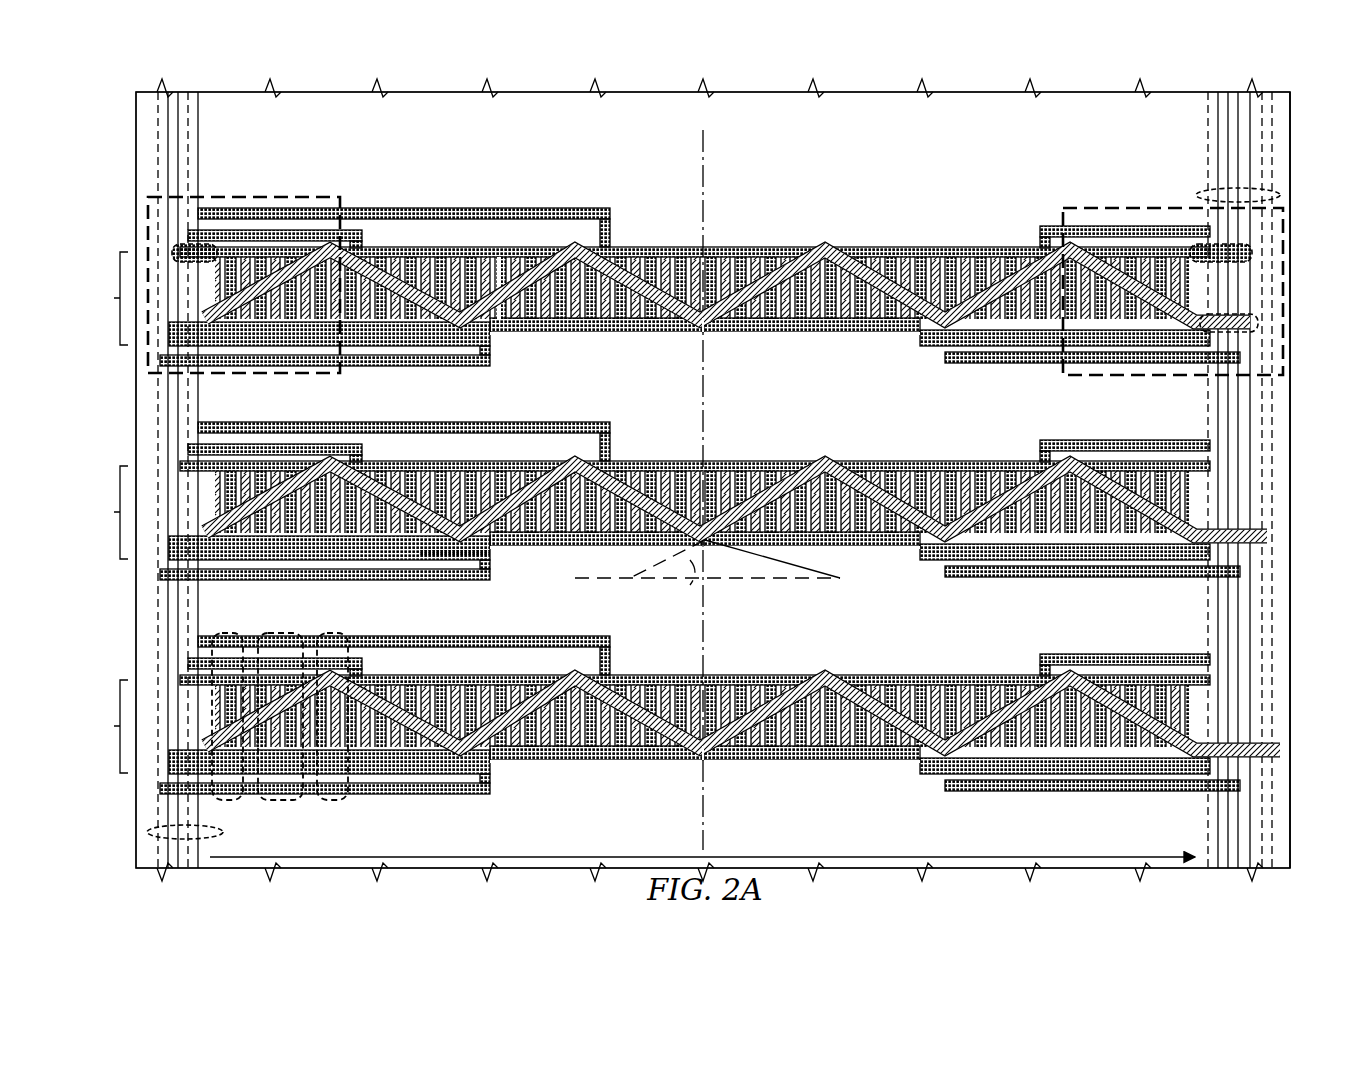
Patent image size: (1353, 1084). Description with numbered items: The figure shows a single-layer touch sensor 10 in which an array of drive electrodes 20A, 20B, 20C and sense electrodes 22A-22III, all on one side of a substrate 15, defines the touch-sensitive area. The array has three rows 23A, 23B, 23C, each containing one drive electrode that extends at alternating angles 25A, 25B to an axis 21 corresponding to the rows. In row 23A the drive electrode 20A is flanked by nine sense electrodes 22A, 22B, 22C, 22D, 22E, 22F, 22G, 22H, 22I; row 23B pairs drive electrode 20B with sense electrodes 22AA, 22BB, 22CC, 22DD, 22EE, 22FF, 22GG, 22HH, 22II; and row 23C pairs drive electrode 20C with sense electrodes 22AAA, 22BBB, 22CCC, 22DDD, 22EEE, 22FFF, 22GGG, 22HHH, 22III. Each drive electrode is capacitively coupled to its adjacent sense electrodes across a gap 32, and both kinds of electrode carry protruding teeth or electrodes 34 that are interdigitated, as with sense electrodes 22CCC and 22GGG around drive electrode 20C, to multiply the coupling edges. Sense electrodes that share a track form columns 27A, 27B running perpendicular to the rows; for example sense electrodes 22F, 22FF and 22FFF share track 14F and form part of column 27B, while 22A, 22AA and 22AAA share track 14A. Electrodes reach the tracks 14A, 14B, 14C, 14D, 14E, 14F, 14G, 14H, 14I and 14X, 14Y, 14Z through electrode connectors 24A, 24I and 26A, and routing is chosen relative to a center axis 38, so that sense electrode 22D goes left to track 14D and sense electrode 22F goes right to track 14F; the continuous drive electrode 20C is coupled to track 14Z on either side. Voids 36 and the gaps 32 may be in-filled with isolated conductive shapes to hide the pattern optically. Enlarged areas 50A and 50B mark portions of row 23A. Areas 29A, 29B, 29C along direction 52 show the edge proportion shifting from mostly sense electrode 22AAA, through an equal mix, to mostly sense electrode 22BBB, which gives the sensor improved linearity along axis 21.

The touch sensor 10 is at (838, 172).
The track 14A is at (178, 183).
The track 14B is at (160, 165).
The track 14C is at (188, 163).
The track 14D is at (170, 185).
The track 14E is at (198, 143).
The track 14F is at (1238, 152).
The track 14G is at (1208, 142).
The track 14H is at (1228, 182).
The track 14I is at (1218, 160).
The track 14X is at (1250, 172).
The track 14Y is at (1262, 412).
The track 14Z is at (1272, 688).
The substrate 15 is at (1290, 840).
The drive electrode 20A is at (826, 252).
The drive electrode 20B is at (736, 476).
The drive electrode 20C is at (742, 687).
The axis 21 is at (720, 578).
The sense electrode 22A is at (285, 262).
The sense electrode 22B is at (388, 330).
The sense electrode 22C is at (470, 257).
The sense electrode 22D is at (608, 330).
The sense electrode 22E is at (742, 260).
The sense electrode 22F is at (840, 330).
The sense electrode 22G is at (936, 260).
The sense electrode 22H is at (1032, 336).
The sense electrode 22I is at (1105, 262).
The sense electrode 22AA is at (277, 463).
The sense electrode 22BB is at (325, 583).
The sense electrode 22CC is at (465, 462).
The sense electrode 22DD is at (596, 571).
The sense electrode 22EE is at (710, 470).
The sense electrode 22FF is at (812, 571).
The sense electrode 22GG is at (952, 474).
The sense electrode 22HH is at (1092, 572).
The sense electrode 22II is at (1132, 470).
The sense electrode 22AAA is at (277, 671).
The sense electrode 22BBB is at (325, 793).
The sense electrode 22CCC is at (465, 675).
The sense electrode 22DDD is at (596, 783).
The sense electrode 22EEE is at (710, 683).
The sense electrode 22FFF is at (812, 780).
The sense electrode 22GGG is at (952, 687).
The sense electrode 22HHH is at (1092, 789).
The sense electrode 22III is at (1132, 682).
The row 23A is at (99, 298).
The row 23B is at (99, 512).
The row 23C is at (99, 726).
The electrode connector 24A is at (175, 252).
The electrode connector 24I is at (1252, 253).
The angle 25A is at (775, 575).
The angle 25B is at (690, 580).
The electrode connector 26A is at (1258, 324).
The column 27A is at (148, 832).
The column 27B is at (1282, 196).
The area 29A is at (228, 802).
The area 29B is at (285, 802).
The area 29C is at (335, 802).
The gap 32 is at (742, 318).
The electrodes 34 is at (545, 257).
The voids 36 is at (420, 556).
The center axis 38 is at (728, 773).
The enlarged area 50A is at (340, 210).
The enlarged area 50B is at (1063, 215).
The direction 52 is at (930, 855).